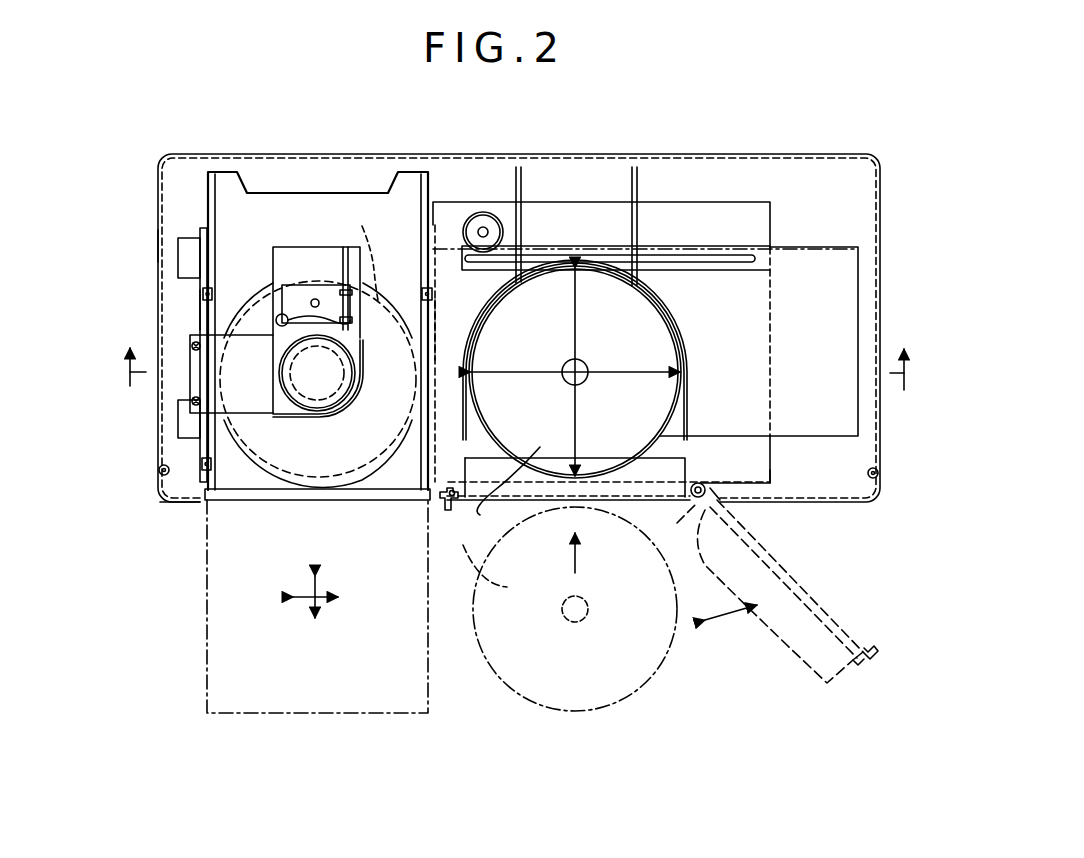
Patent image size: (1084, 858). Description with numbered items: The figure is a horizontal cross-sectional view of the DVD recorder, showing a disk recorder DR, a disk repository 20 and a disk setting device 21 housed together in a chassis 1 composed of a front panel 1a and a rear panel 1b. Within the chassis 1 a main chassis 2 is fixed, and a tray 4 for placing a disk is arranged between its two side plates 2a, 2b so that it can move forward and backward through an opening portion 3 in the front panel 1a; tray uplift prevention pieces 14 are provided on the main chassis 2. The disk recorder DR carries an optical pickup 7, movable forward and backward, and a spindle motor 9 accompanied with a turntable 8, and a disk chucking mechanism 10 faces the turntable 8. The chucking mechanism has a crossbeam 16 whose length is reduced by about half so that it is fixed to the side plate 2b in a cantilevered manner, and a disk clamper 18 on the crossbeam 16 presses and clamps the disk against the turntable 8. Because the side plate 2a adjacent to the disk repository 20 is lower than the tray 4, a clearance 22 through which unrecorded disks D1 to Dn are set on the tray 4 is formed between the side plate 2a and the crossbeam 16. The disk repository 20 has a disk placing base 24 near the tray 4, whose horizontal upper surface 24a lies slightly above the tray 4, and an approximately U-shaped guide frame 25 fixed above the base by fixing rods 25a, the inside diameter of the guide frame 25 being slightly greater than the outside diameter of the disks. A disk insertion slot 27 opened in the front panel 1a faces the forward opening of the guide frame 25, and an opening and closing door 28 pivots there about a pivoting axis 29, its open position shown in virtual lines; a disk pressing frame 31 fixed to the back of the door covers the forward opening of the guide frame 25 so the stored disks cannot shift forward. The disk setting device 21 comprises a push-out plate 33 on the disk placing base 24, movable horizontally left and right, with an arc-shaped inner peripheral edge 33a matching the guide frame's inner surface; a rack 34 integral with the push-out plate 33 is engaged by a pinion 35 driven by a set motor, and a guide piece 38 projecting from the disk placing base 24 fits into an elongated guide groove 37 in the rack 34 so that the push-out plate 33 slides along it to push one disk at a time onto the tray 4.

The chassis 1 is at (156, 209).
The front panel 1a is at (178, 501).
The rear panel 1b is at (157, 247).
The main chassis 2 is at (192, 229).
The side plate 2a is at (453, 352).
The side plate 2b is at (200, 318).
The opening portion 3 is at (203, 501).
The tray 4 is at (262, 493).
The optical pickup 7 is at (291, 290).
The turntable 8 is at (276, 366).
The spindle motor 9 is at (235, 371).
The disk chucking mechanism 10 is at (346, 409).
The tray uplift prevention pieces 14 is at (213, 293).
The crossbeam 16 is at (255, 413).
The disk clamper 18 is at (320, 407).
The disk repository 20 is at (693, 363).
The disk setting device 21 is at (810, 240).
The clearance 22 is at (381, 350).
The disk placing base 24 is at (776, 446).
The upper surface 24a is at (761, 463).
The guide frame 25 is at (678, 330).
The fixing rods 25a is at (632, 183).
The disk insertion slot 27 is at (703, 500).
The opening and closing door 28 is at (645, 492).
The pivoting axis 29 is at (698, 484).
The disk pressing frame 31 is at (480, 473).
The push-out plate 33 is at (838, 430).
The inner peripheral edge 33a is at (668, 427).
The rack 34 is at (692, 246).
The pinion 35 is at (483, 211).
The guide groove 37 is at (678, 259).
The guide piece 38 is at (475, 262).
The disk recorder DR is at (198, 184).
The unrecorded disk D1 is at (352, 251).